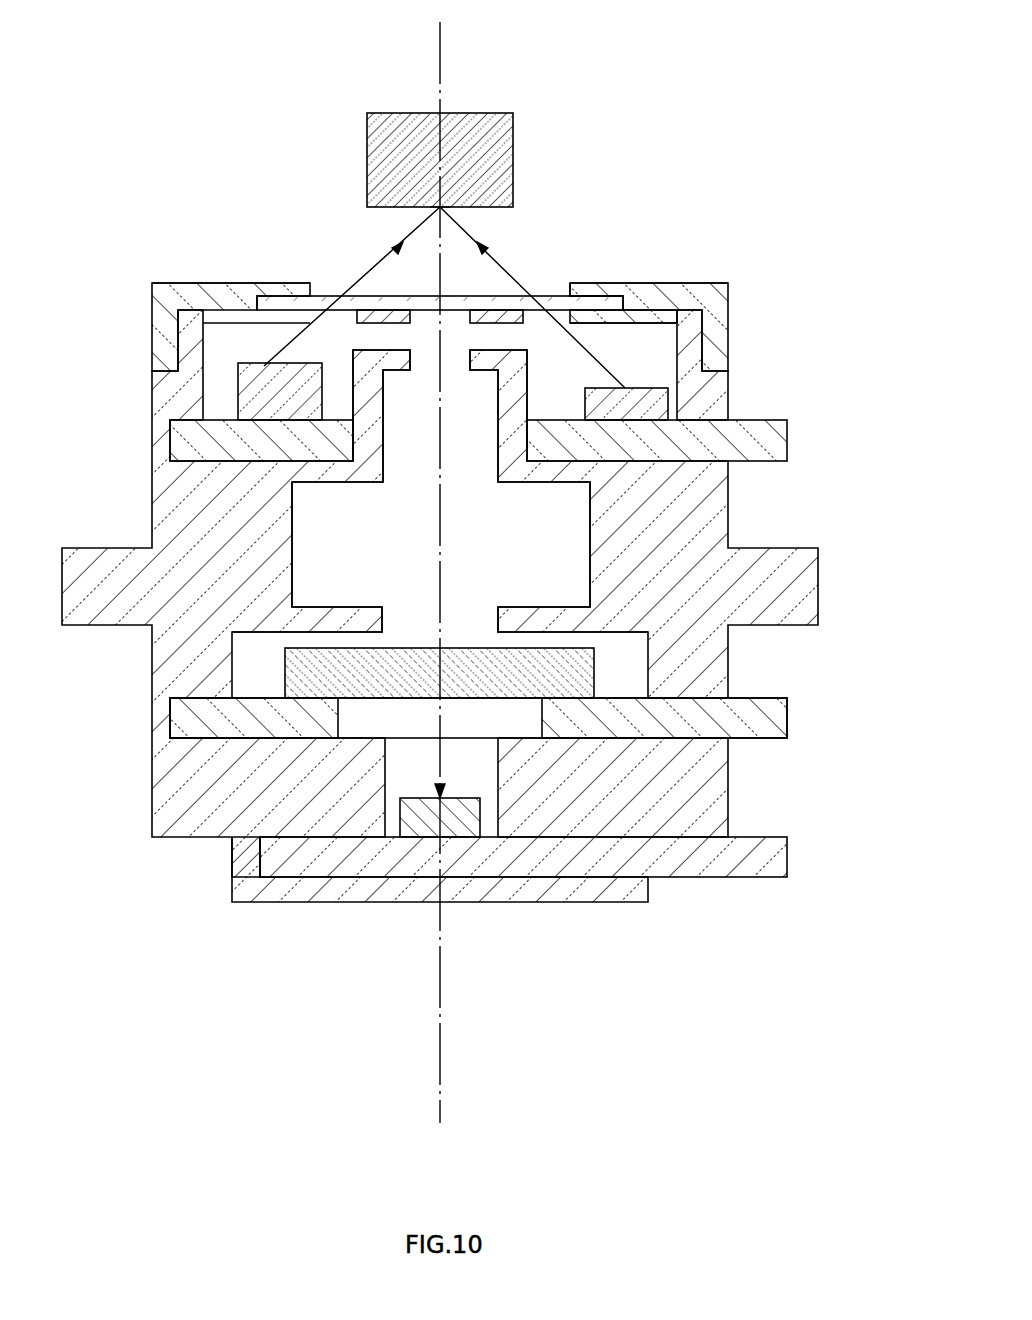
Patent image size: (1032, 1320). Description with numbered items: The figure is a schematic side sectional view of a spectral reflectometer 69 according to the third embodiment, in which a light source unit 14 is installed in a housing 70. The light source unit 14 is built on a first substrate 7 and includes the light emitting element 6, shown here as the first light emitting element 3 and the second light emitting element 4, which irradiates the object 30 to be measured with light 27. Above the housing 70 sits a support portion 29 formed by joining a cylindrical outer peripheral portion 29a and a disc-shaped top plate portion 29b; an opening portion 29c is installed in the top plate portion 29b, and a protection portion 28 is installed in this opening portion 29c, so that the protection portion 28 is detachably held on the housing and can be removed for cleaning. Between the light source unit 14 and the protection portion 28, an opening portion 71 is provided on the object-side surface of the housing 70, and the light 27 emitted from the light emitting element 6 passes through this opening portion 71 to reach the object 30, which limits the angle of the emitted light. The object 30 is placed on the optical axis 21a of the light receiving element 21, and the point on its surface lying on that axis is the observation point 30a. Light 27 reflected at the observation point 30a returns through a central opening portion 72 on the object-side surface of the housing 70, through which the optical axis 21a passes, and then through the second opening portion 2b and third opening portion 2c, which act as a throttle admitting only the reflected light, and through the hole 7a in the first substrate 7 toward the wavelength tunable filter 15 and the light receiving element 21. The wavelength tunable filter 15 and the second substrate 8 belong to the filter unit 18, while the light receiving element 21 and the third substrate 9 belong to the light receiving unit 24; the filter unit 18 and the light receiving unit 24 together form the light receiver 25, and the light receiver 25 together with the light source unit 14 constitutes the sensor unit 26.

The spectral reflectometer 69 is at (784, 58).
The object to be measured 30 is at (367, 160).
The observation point 30a is at (440, 213).
The protection portion 28 is at (336, 293).
The light 27 is at (444, 572).
The support portion 29 is at (498, 297).
The outer peripheral portion 29a is at (722, 316).
The top plate portion 29b is at (655, 290).
The opening portion 29c is at (570, 287).
The second light emitting element 4 is at (248, 404).
The first light emitting element 3 is at (653, 400).
The light emitting element 6 is at (440, 393).
The opening portion 71 is at (354, 316).
The central opening portion 72 is at (472, 315).
The second opening portion 2b is at (412, 362).
The third opening portion 2c is at (385, 615).
The first substrate 7 is at (524, 451).
The light source unit 14 is at (774, 440).
The sensor unit 26 is at (528, 658).
The hole 7a is at (527, 440).
The housing 70 is at (472, 606).
The second substrate 8 is at (528, 730).
The filter unit 18 is at (777, 718).
The light receiver 25 is at (528, 797).
The wavelength tunable filter 15 is at (475, 690).
The light receiving element 21 is at (412, 810).
The optical axis 21a is at (441, 961).
The third substrate 9 is at (573, 866).
The light receiving unit 24 is at (777, 853).